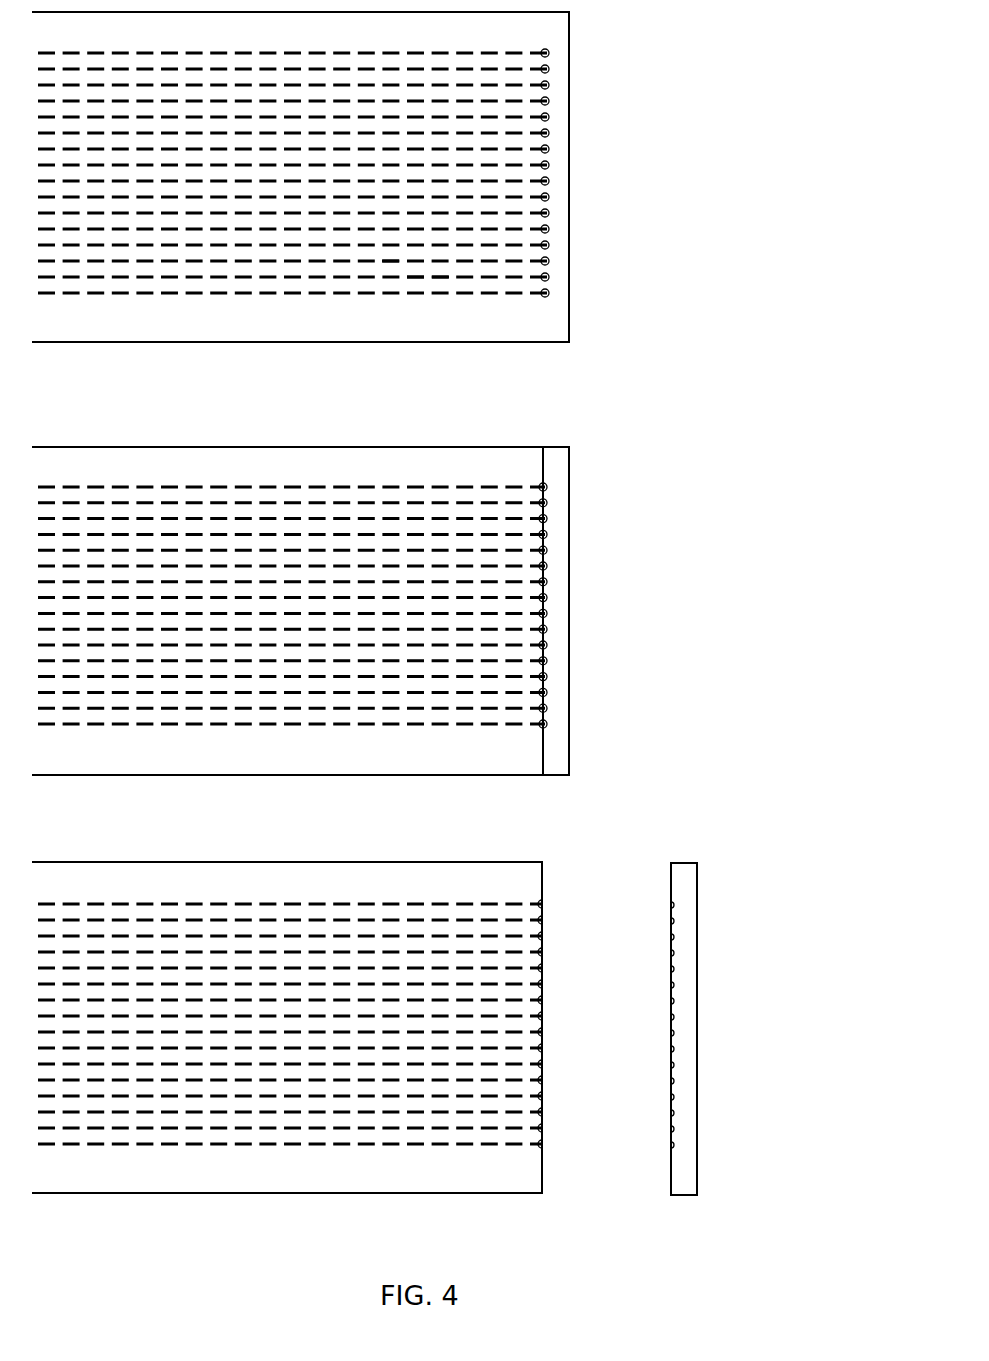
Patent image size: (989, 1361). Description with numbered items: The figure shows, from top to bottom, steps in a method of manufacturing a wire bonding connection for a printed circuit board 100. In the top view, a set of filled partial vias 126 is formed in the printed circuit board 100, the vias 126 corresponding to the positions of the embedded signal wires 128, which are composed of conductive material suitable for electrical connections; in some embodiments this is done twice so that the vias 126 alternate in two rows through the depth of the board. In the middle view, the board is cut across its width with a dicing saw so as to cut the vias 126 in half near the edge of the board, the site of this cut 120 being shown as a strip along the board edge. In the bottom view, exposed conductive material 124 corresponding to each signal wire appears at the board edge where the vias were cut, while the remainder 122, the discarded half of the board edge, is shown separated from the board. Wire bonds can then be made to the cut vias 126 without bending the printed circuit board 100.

The printed circuit board 100 is at (582, 105).
The cut 120 is at (541, 447).
The discarded half of the board edge 122 is at (683, 863).
The exposed conductive material at the board edge 124 is at (542, 936).
The via 126 is at (549, 150).
The signal wire 128 is at (385, 250).